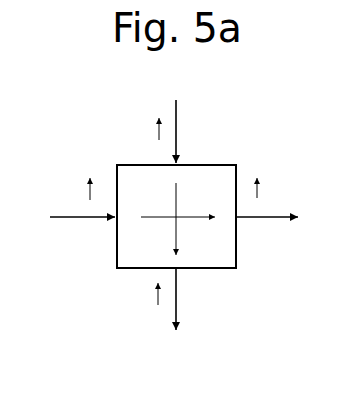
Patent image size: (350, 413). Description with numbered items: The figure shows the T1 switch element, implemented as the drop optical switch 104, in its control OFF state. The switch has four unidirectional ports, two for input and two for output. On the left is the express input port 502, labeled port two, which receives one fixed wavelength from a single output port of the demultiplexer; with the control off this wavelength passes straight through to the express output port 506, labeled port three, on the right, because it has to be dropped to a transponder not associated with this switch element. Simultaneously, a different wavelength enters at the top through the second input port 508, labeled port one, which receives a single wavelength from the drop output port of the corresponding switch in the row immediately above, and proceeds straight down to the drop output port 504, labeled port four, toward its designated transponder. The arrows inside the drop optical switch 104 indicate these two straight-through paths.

The drop optical switch 104 is at (135, 172).
The express input port 502 is at (72, 216).
The drop output port 504 is at (176, 309).
The express output port 506 is at (268, 216).
The second input port 508 is at (177, 128).